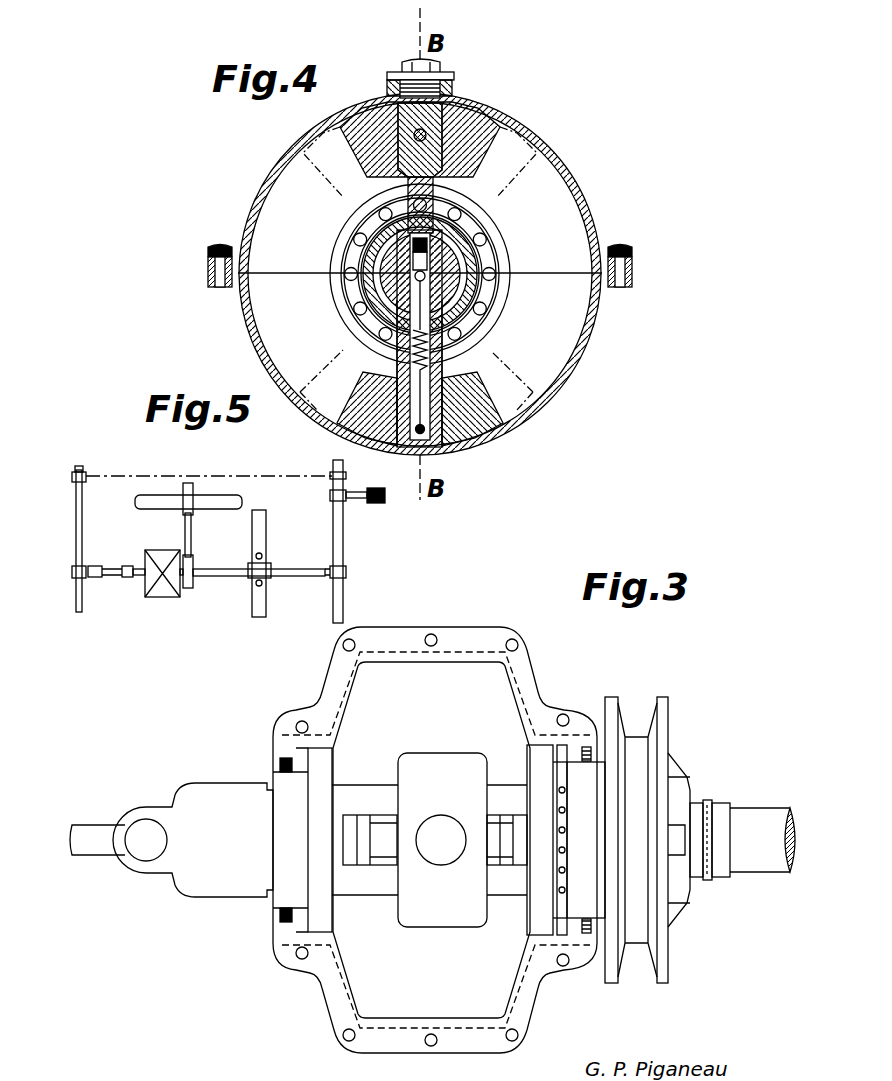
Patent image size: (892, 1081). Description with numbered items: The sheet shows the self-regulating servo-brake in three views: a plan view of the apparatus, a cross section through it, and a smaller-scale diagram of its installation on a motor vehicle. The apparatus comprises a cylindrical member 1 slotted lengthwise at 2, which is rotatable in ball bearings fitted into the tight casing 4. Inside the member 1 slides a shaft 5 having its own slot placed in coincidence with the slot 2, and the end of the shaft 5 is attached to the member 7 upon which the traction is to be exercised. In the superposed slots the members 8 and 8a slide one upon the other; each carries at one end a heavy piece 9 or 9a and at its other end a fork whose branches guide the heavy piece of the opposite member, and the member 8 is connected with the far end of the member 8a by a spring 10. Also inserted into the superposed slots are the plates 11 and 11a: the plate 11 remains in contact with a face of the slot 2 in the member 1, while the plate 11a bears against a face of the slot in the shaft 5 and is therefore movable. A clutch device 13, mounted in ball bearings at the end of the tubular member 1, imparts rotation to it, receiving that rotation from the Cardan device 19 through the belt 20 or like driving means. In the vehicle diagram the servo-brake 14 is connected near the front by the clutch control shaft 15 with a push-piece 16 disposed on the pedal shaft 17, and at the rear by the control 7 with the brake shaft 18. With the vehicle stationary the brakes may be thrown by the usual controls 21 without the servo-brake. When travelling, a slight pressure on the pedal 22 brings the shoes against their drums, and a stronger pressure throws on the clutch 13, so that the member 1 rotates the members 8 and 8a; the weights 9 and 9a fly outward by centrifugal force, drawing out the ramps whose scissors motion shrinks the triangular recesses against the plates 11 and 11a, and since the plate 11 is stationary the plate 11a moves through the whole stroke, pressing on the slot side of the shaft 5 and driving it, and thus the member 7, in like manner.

In FIG. 4, the stationary cylindrical member 1 is at (462, 303).
In FIG. 4, the slot 2 is at (393, 227).
In FIG. 4, the tight casing 4 is at (552, 142).
In FIG. 3, the tight casing 4 is at (435, 840).
In FIG. 4, the shaft 5 is at (455, 272).
In FIG. 5, the member upon which traction is exercised 7 is at (110, 578).
In FIG. 3, the member upon which traction is exercised 7 is at (92, 858).
In FIG. 4, the sliding member 8 is at (428, 193).
In FIG. 4, the sliding member 8a is at (400, 352).
In FIG. 4, the heavy piece 9 is at (476, 140).
In FIG. 4, the heavy piece 9a is at (466, 420).
In FIG. 4, the spring 10 is at (405, 370).
In FIG. 3, the plate 11 is at (386, 852).
In FIG. 3, the plate 11a is at (498, 850).
In FIG. 5, the clutch device 13 is at (197, 585).
In FIG. 3, the clutch device 13 is at (664, 730).
In FIG. 5, the self-regulating servo-brake 14 is at (166, 590).
In FIG. 5, the clutch control shaft 15 is at (290, 565).
In FIG. 5, the push-piece 16 is at (325, 578).
In FIG. 5, the pedal shaft 17 is at (341, 598).
In FIG. 5, the brake shaft 18 is at (76, 602).
In FIG. 5, the Cardan device 19 is at (211, 500).
In FIG. 5, the belt 20 is at (192, 537).
In FIG. 5, the usual controls 21 is at (276, 474).
In FIG. 5, the pedal 22 is at (374, 505).